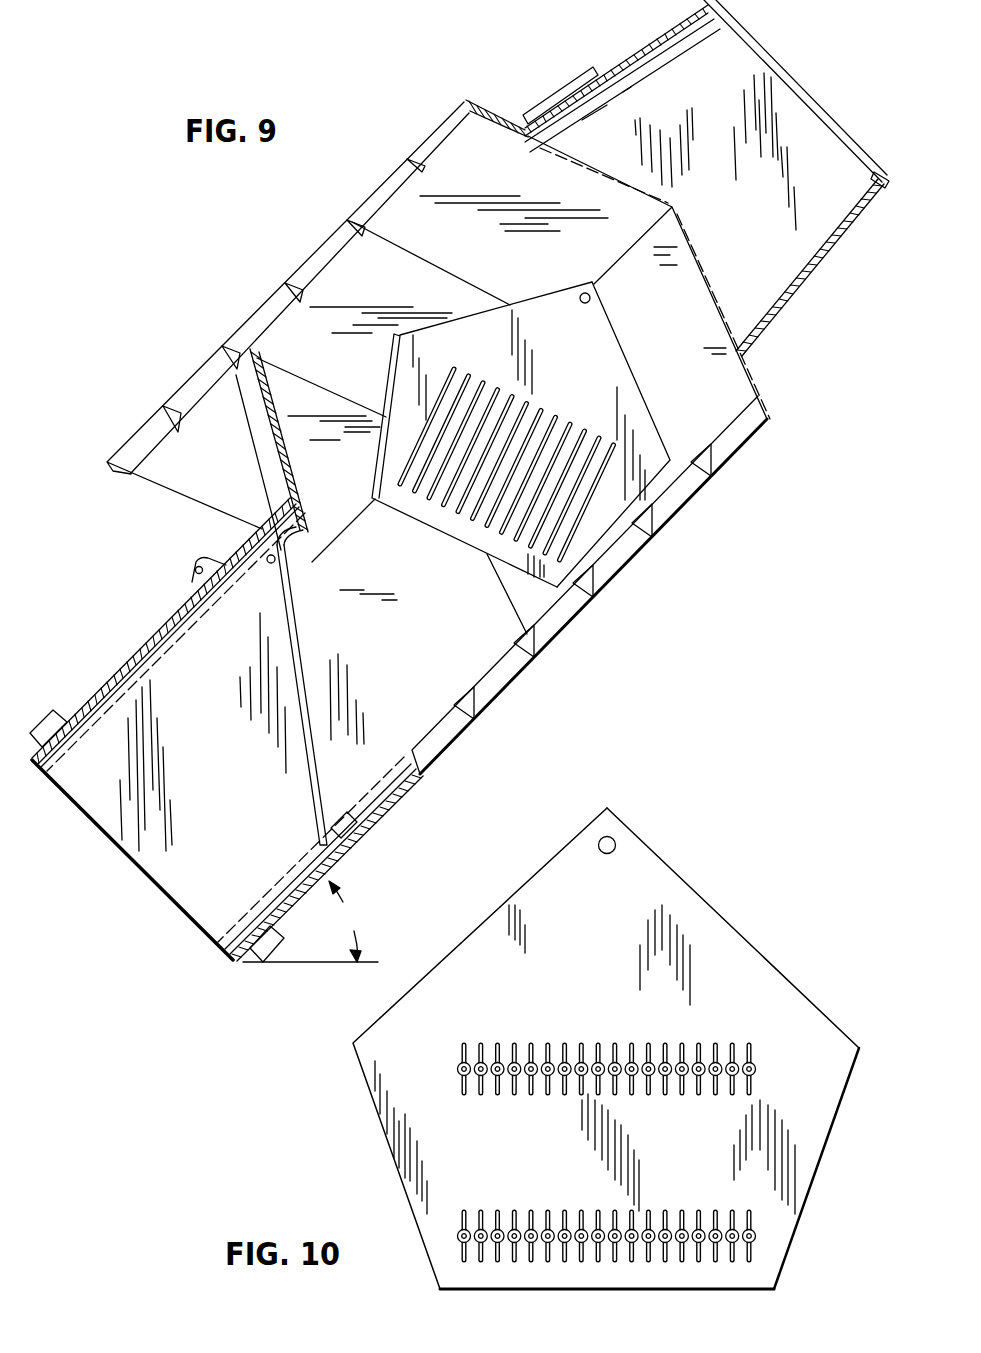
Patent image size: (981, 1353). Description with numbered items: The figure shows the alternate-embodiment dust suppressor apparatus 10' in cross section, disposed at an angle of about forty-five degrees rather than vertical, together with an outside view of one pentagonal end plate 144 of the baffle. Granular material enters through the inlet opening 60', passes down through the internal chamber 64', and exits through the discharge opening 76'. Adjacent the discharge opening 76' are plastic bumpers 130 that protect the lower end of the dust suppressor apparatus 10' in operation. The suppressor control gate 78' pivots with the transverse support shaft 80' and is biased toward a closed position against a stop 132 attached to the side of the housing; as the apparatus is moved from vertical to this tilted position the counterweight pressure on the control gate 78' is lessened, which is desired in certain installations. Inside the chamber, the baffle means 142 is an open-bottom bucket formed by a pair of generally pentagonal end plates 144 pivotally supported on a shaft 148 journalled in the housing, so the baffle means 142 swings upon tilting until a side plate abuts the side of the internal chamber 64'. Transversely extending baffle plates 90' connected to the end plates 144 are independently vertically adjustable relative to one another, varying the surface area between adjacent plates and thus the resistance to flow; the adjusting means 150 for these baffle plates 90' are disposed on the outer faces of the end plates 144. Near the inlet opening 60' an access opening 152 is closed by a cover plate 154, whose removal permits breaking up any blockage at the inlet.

In FIG. 9, the dust suppressor apparatus 10' is at (438, 531).
In FIG. 9, the inlet opening 60' is at (762, 178).
In FIG. 9, the internal chamber 64' is at (392, 428).
In FIG. 9, the discharge opening 76' is at (167, 737).
In FIG. 9, the suppressor control gate 78' is at (277, 695).
In FIG. 9, the transverse support shaft 80' is at (247, 569).
In FIG. 9, the baffle plates 90' is at (507, 462).
In FIG. 10, the baffle plates 90' is at (572, 1122).
In FIG. 9, the plastic bumpers 130 is at (273, 948).
In FIG. 9, the stop 132 is at (360, 818).
In FIG. 9, the baffle means 142 is at (655, 416).
In FIG. 10, the baffle means 142 is at (712, 907).
In FIG. 9, the end plates 144 is at (612, 340).
In FIG. 10, the end plates 144 is at (725, 986).
In FIG. 9, the shaft 148 is at (590, 296).
In FIG. 10, the shaft 148 is at (616, 843).
In FIG. 10, the adjusting means 150 is at (457, 1081).
In FIG. 9, the access opening 152 is at (597, 76).
In FIG. 9, the cover plate 154 is at (556, 95).